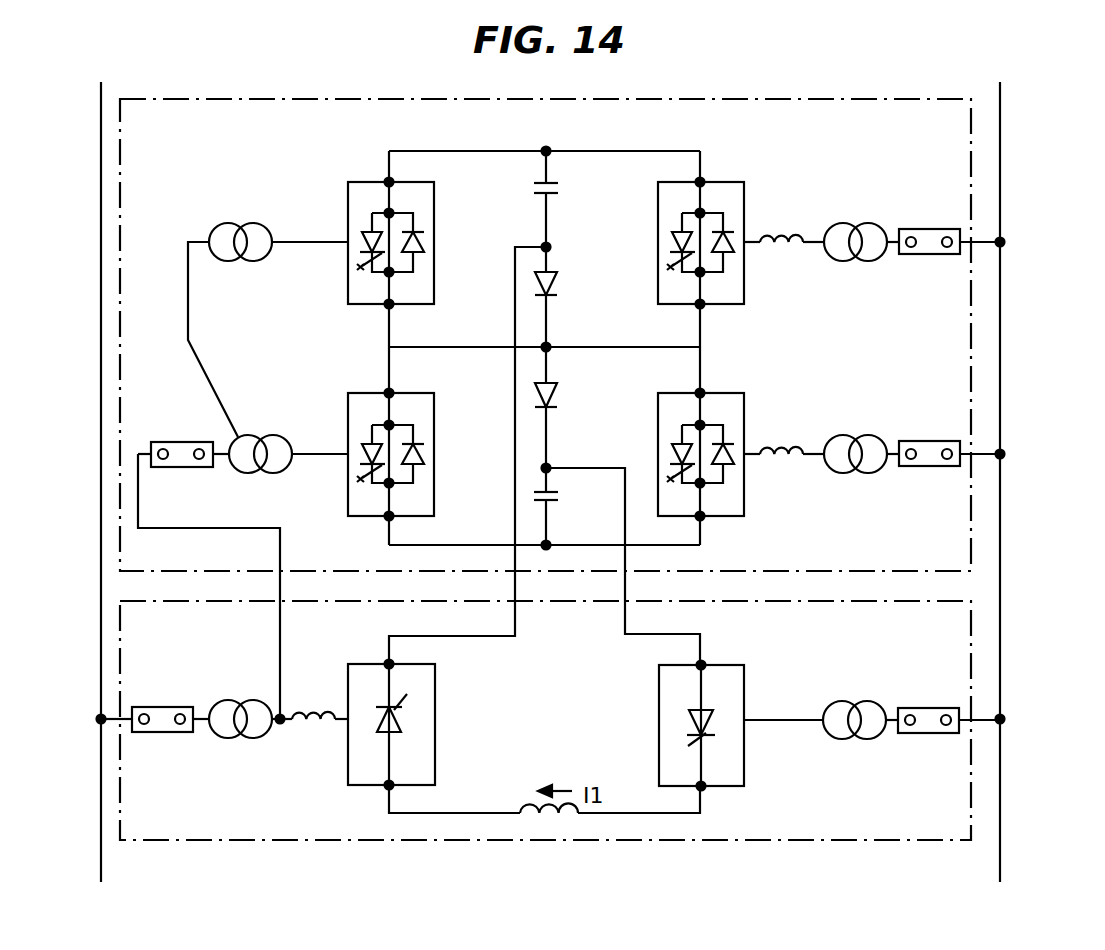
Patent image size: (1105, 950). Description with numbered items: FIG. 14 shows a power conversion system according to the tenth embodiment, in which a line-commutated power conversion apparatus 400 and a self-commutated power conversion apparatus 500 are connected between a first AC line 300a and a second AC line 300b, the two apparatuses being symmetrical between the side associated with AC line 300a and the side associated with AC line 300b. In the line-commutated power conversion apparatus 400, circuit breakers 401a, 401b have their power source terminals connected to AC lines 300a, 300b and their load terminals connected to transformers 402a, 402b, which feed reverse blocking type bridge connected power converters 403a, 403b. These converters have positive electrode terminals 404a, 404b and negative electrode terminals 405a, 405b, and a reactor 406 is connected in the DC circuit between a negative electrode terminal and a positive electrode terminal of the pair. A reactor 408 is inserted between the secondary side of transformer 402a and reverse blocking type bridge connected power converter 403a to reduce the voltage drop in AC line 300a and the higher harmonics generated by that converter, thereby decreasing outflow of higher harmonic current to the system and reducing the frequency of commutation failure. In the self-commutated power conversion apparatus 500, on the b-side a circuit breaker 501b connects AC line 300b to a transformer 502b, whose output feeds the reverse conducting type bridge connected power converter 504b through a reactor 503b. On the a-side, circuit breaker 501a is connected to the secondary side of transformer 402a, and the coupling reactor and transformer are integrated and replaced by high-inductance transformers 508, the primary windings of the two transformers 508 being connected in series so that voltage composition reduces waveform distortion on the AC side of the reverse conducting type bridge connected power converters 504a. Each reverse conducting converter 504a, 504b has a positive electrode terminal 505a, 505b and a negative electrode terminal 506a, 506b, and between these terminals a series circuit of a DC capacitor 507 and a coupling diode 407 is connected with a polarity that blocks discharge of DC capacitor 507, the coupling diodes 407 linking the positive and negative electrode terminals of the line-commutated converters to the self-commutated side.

The first AC line 300a is at (100, 308).
The second AC line 300b is at (1004, 308).
The self-commutated power conversion apparatus 500 is at (836, 74).
The line-commutated power conversion apparatus 400 is at (789, 874).
The circuit breaker 501a is at (181, 442).
The circuit breaker 501b is at (929, 229).
The transformer 502b is at (851, 226).
The reactor 503b is at (778, 232).
The reverse conducting type bridge connected power converter 504a is at (470, 204).
The reverse conducting type bridge connected power converter 504b is at (656, 204).
The positive electrode terminal 505a is at (387, 181).
The positive electrode terminal 505b is at (702, 181).
The negative electrode terminal 506a is at (387, 306).
The negative electrode terminal 506b is at (702, 306).
The DC capacitor 507 is at (560, 187).
The high-inductance transformer 508 is at (234, 225).
The coupling diode 407 is at (558, 287).
The circuit breaker 401a is at (163, 707).
The circuit breaker 401b is at (929, 708).
The transformer 402a is at (236, 706).
The transformer 402b is at (851, 707).
The reverse blocking type bridge connected power converter 403a is at (437, 702).
The reverse blocking type bridge connected power converter 403b is at (748, 722).
The positive electrode terminal 404a is at (387, 662).
The positive electrode terminal 404b is at (703, 788).
The negative electrode terminal 405a is at (387, 787).
The negative electrode terminal 405b is at (703, 663).
The reactor 406 is at (530, 812).
The reactor 408 is at (309, 712).